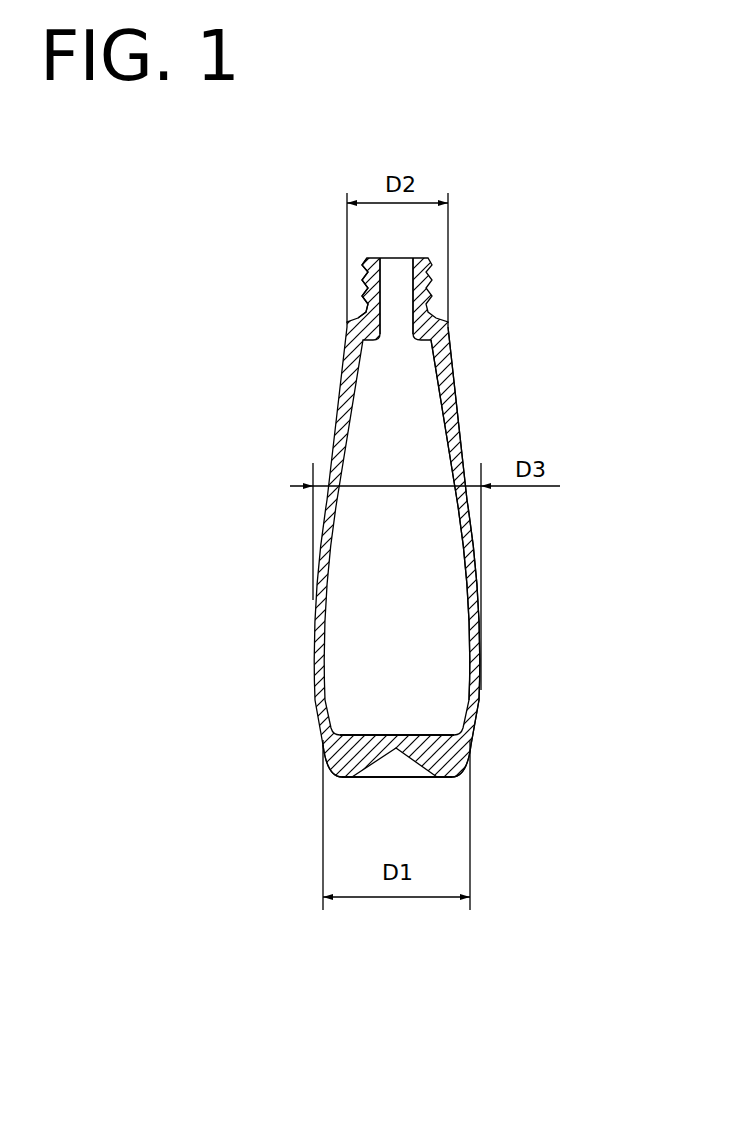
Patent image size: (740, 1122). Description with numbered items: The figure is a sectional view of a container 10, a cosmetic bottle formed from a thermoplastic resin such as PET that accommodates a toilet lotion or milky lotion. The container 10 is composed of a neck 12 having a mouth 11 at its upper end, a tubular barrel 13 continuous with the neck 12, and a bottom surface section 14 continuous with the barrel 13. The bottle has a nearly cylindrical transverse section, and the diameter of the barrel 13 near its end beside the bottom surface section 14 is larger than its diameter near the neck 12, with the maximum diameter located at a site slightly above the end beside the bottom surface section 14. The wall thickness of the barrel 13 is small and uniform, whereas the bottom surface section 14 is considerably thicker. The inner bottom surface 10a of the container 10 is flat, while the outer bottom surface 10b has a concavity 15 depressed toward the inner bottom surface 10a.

The container 10 is at (530, 207).
The inner bottom surface 10a is at (430, 712).
The outer bottom surface 10b is at (430, 780).
The mouth 11 is at (413, 283).
The neck 12 is at (372, 257).
The barrel 13 is at (457, 418).
The bottom surface section 14 is at (448, 747).
The concavity 15 is at (383, 769).